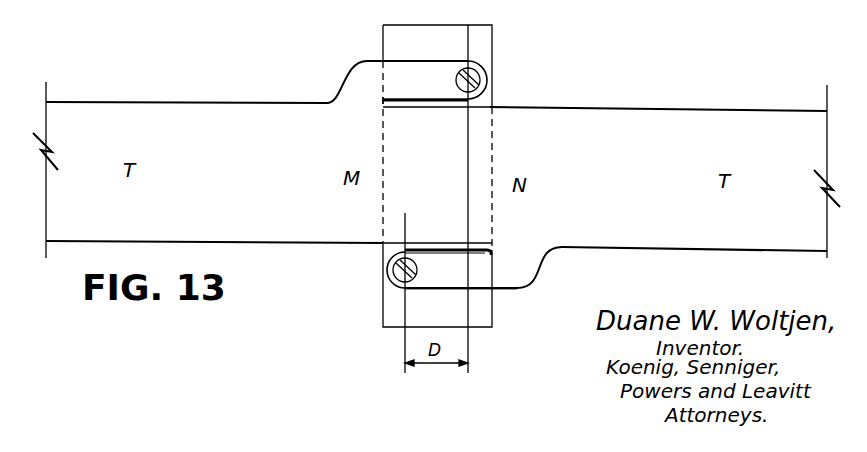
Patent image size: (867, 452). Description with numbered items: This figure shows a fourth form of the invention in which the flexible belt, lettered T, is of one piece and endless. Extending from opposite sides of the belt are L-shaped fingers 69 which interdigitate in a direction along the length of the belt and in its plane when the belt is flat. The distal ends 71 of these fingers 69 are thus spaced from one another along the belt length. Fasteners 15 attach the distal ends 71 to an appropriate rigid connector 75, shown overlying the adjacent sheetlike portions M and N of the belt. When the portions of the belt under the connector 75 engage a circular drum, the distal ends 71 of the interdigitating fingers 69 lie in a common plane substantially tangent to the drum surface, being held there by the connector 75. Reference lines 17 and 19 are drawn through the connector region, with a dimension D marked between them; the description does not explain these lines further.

The fastener 15 is at (478, 87).
The rigid connector 75 is at (483, 43).
The L-shaped finger 69 is at (433, 50).
The distal end 71 is at (488, 73).
The reference line 17 is at (466, 215).
The reference line 19 is at (401, 309).